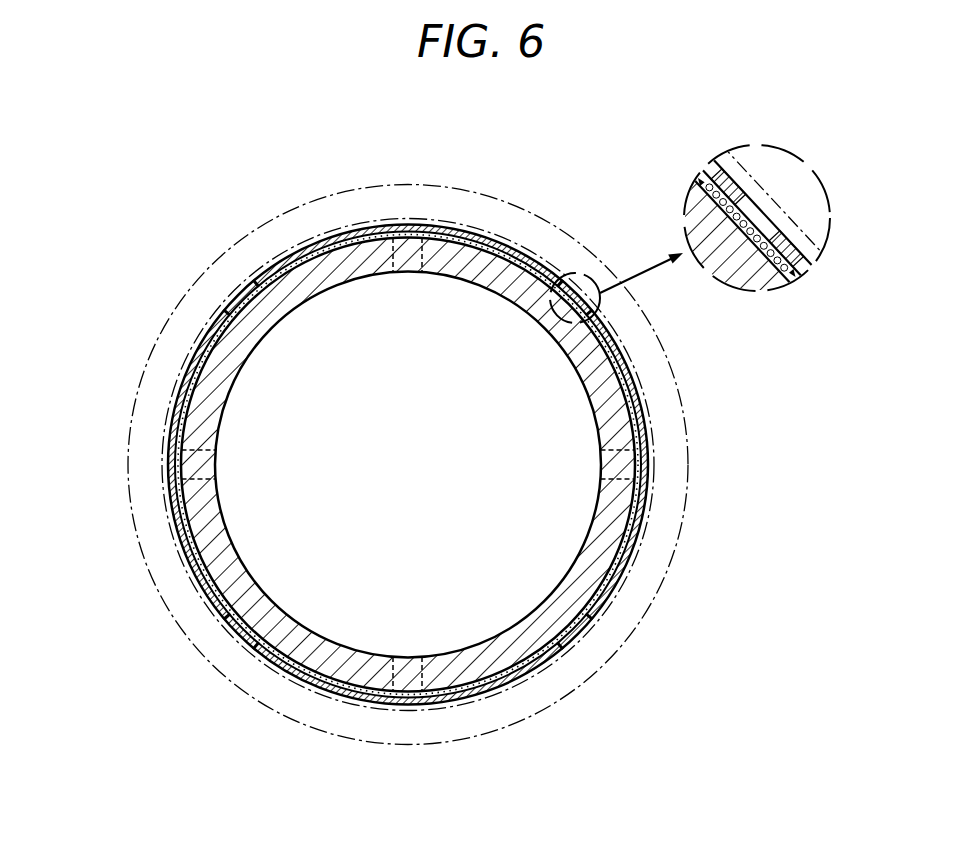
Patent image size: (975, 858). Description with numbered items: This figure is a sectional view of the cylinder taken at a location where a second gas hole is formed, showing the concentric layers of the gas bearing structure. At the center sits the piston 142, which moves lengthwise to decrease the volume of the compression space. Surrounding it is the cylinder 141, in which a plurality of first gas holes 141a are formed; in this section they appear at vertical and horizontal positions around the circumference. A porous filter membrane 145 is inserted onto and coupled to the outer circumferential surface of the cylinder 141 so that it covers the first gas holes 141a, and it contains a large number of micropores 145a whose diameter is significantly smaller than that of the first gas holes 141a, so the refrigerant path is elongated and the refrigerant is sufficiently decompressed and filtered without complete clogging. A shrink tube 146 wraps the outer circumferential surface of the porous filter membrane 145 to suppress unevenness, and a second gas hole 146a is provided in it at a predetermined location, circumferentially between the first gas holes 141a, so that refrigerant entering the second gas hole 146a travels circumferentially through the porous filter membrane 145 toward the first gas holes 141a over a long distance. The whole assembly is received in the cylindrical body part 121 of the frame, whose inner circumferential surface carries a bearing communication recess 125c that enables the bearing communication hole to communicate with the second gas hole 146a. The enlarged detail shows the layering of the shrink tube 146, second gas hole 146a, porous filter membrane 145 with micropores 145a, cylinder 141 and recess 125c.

The body part 121 is at (210, 265).
The bearing communication recess 125c is at (645, 532).
The cylinder 141 is at (613, 422).
The first gas hole 141a is at (397, 257).
The piston 142 is at (312, 293).
The porous filter membrane 145 is at (467, 240).
The micropore 145a is at (768, 267).
The shrink tube 146 is at (530, 250).
The second gas hole 146a is at (575, 276).